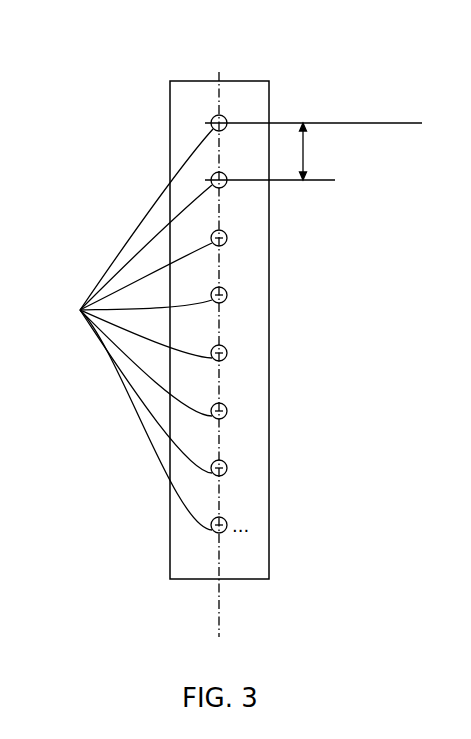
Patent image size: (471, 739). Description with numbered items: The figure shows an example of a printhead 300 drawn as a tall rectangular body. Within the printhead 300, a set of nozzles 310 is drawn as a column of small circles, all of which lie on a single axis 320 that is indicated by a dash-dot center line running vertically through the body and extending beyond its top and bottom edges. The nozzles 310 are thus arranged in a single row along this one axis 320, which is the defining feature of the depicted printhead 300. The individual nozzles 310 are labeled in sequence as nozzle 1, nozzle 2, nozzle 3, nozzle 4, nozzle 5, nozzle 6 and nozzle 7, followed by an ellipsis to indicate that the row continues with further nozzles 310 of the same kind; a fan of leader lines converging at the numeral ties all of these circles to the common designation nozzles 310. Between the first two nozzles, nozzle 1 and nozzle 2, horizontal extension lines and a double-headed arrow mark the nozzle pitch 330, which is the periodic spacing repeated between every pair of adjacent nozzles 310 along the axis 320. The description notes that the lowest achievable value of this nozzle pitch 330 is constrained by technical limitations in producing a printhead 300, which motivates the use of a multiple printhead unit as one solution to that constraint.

The printhead 300 is at (233, 80).
The nozzles 310 is at (126, 329).
The single axis 320 is at (220, 604).
The nozzle pitch 330 is at (323, 151).
The first position 1 is at (313, 123).
The second position 2 is at (270, 180).
The third position 3 is at (227, 238).
The fourth position 4 is at (227, 295).
The fifth position 5 is at (227, 353).
The sixth position 6 is at (227, 411).
The seventh position 7 is at (227, 468).